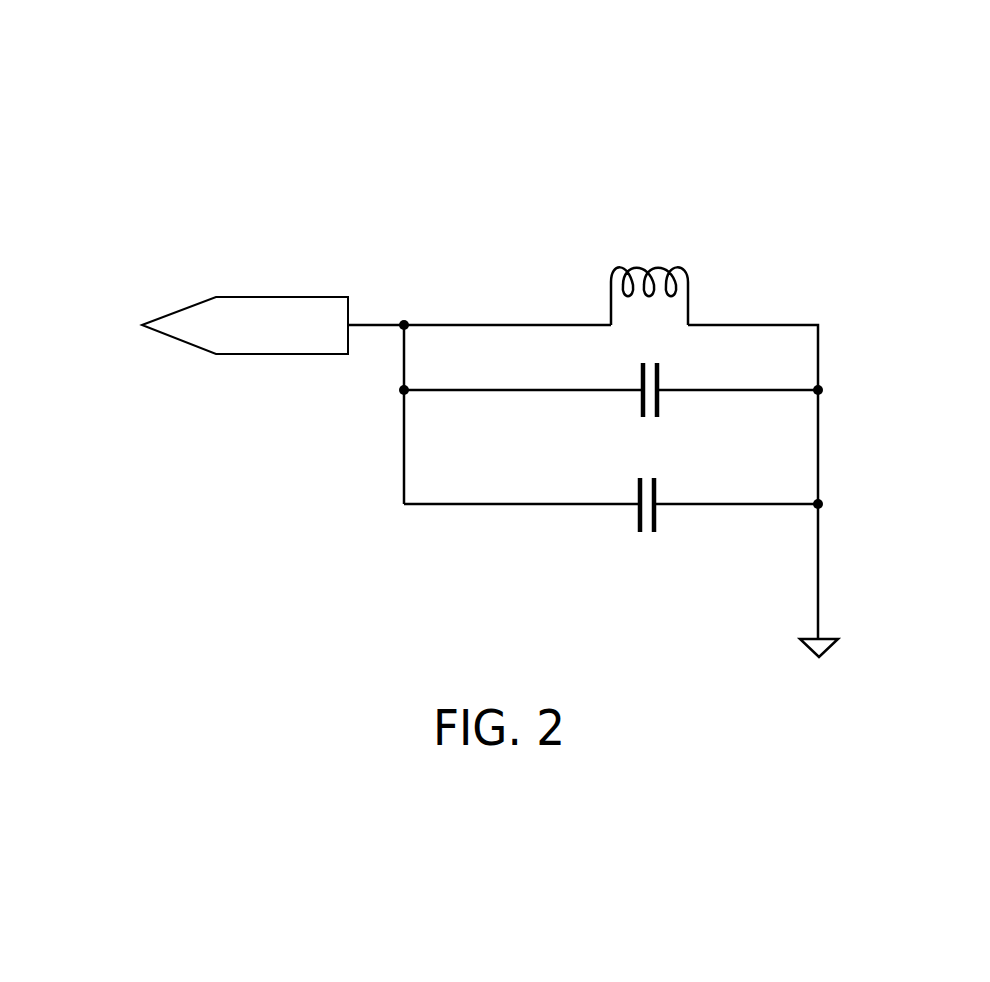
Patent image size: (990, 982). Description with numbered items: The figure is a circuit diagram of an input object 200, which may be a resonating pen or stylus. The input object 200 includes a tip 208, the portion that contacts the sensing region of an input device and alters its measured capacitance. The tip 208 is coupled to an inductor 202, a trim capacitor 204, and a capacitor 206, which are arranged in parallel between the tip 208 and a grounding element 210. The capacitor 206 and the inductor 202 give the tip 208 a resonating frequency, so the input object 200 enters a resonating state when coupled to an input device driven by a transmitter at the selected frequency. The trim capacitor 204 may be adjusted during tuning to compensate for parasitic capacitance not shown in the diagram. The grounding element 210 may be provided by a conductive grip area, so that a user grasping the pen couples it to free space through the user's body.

The input object 200 is at (870, 98).
The inductor 202 is at (636, 260).
The trim capacitor 204 is at (662, 373).
The capacitor 206 is at (657, 488).
The tip 208 is at (246, 297).
The grounding element 210 is at (832, 635).